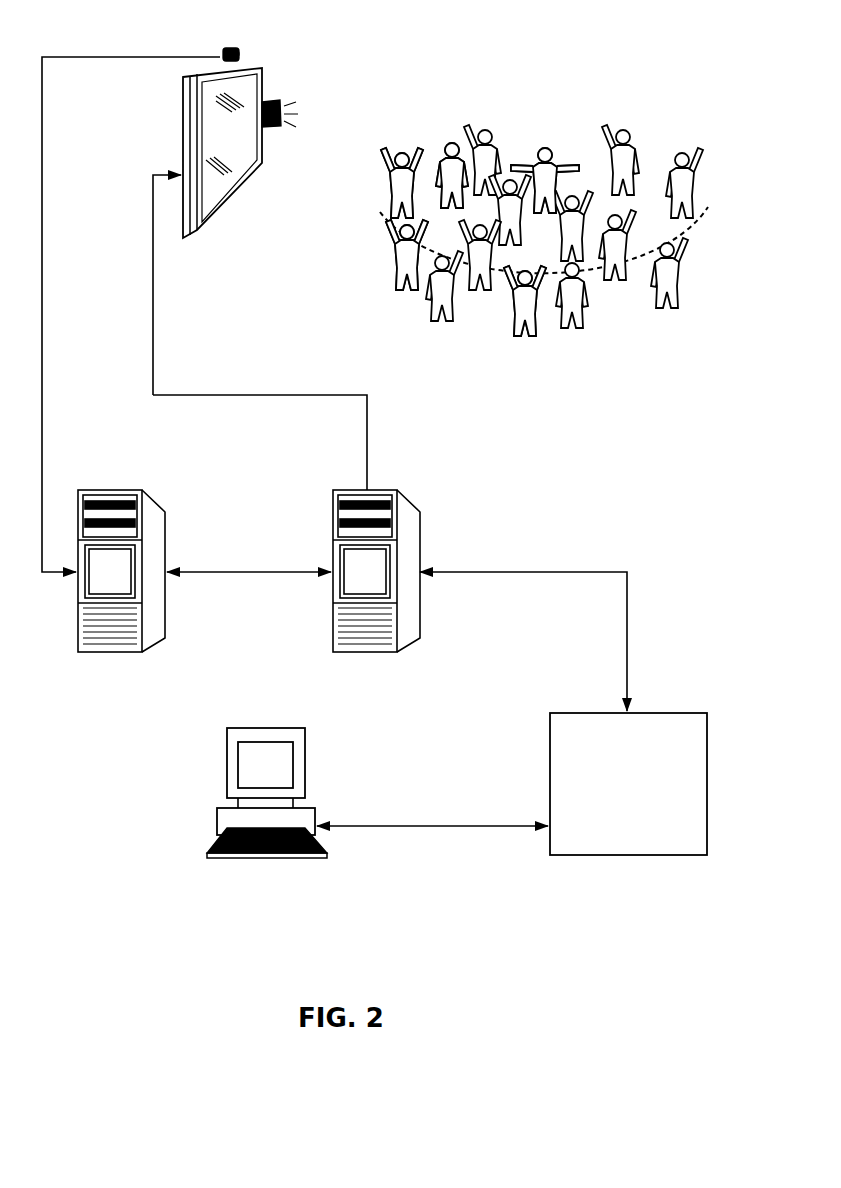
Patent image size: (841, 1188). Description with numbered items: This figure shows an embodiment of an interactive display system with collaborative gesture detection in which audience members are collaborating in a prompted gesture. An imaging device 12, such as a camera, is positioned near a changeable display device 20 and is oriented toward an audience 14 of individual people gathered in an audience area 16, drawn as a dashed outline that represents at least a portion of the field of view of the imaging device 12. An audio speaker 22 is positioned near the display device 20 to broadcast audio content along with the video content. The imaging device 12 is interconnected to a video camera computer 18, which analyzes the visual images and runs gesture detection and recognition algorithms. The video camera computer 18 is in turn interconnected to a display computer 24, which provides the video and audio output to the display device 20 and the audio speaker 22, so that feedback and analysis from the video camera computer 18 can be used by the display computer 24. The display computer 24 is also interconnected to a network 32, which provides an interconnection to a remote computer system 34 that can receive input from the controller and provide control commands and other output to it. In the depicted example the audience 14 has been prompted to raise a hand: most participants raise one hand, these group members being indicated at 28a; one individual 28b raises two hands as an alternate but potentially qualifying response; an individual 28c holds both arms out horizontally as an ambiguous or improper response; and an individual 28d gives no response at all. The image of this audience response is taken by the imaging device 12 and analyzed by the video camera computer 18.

The imaging device 12 is at (228, 50).
The audience 14 is at (614, 327).
The audience area 16 is at (665, 327).
The video camera computer 18 is at (157, 615).
The display device 20 is at (213, 130).
The audio speaker 22 is at (280, 103).
The display computer 24 is at (413, 532).
The group members raising one hand 28a is at (398, 187).
The individual raising two hands 28b is at (522, 310).
The individual holding both arms out horizontally 28c is at (548, 148).
The individual giving no response 28d is at (448, 145).
The network 32 is at (628, 784).
The remote computer system 34 is at (222, 820).